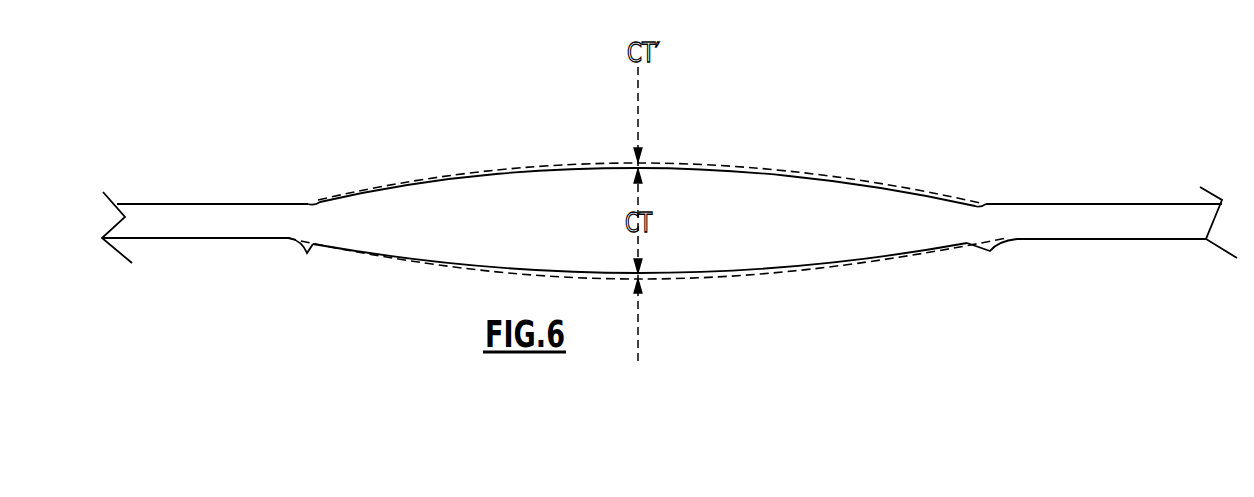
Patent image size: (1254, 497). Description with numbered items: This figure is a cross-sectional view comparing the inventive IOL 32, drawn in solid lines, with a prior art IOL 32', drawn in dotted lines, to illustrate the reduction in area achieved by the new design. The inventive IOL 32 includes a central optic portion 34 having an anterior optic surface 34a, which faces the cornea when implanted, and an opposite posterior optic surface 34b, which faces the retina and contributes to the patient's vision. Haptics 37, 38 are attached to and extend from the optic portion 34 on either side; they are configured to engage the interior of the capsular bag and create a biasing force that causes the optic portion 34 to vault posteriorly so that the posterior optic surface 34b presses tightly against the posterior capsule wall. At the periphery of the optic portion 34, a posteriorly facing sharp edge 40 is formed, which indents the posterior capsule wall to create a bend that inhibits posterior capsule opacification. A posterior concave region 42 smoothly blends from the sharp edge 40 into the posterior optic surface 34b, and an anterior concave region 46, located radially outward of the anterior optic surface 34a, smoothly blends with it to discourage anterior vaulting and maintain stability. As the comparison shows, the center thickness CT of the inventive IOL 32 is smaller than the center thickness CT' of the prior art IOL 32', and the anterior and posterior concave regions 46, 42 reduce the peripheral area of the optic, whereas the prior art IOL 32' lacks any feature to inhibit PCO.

The IOL 32 is at (647, 227).
The prior art IOL 32' is at (647, 195).
The central optic portion 34 is at (715, 197).
The anterior optic surface 34a is at (813, 180).
The posterior optic surface 34b is at (720, 276).
The haptic 37 is at (133, 203).
The haptic 38 is at (1168, 213).
The sharp edge 40 is at (307, 254).
The posterior concave region 42 is at (318, 247).
The anterior concave region 46 is at (317, 203).